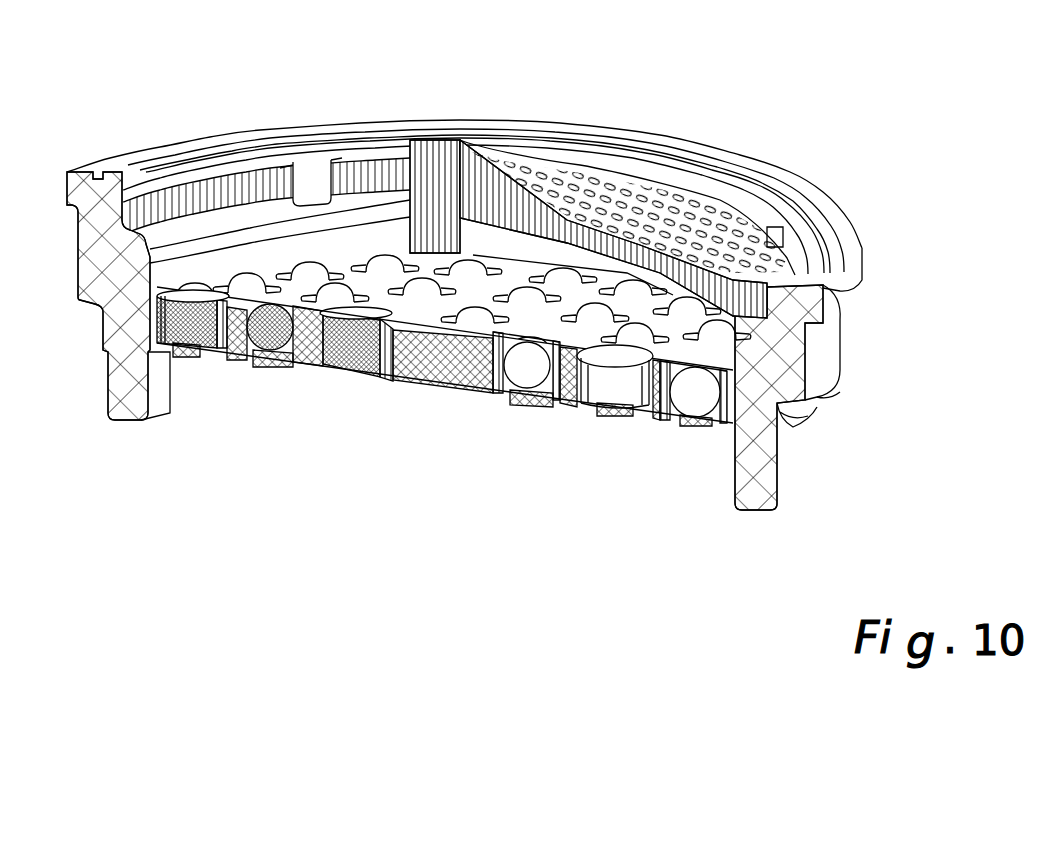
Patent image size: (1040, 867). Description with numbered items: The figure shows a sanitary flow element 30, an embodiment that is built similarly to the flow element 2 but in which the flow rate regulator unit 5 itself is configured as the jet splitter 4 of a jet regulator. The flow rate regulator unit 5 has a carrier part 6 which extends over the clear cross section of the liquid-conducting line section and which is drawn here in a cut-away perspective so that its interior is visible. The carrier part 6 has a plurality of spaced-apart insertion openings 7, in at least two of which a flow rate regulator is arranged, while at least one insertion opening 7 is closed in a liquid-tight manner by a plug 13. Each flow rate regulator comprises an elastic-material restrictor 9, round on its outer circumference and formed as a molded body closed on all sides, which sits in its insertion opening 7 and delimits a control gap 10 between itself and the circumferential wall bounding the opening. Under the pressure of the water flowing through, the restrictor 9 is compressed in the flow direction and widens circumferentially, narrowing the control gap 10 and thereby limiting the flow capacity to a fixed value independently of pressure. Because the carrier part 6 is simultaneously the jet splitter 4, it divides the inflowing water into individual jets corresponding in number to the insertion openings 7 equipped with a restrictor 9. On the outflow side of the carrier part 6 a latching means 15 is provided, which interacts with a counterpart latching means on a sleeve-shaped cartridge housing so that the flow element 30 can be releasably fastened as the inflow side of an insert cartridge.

The sanitary flow element 30 is at (826, 118).
The sanitary flow element 2 is at (584, 190).
The flow rate regulator unit 5 is at (524, 228).
The control gap 10 is at (500, 328).
The jet splitter 4 is at (355, 412).
The carrier part 6 is at (460, 367).
The insertion opening 7 is at (517, 372).
The restrictor 9 is at (540, 370).
The plug 13 is at (181, 357).
The latching means 15 is at (822, 427).